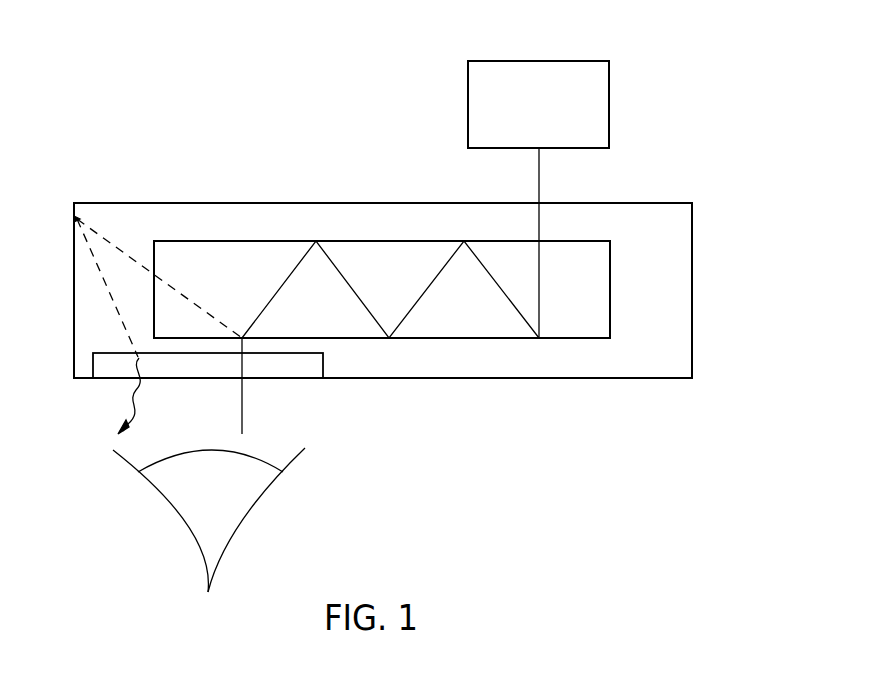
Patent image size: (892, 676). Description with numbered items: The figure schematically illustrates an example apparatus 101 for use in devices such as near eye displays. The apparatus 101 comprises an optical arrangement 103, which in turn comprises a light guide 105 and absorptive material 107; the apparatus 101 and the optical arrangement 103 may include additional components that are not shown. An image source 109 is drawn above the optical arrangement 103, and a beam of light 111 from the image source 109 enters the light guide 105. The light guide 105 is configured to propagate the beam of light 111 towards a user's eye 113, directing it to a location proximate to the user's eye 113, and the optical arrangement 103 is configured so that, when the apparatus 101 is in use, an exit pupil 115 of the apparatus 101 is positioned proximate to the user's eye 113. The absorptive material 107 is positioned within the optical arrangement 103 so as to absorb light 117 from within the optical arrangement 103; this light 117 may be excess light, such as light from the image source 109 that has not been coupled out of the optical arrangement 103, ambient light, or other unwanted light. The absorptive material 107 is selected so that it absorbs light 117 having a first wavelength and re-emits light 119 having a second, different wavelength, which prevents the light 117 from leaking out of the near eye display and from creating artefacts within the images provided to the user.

The apparatus 101 is at (701, 183).
The optical arrangement 103 is at (677, 275).
The light guide 105 is at (573, 338).
The absorptive material 107 is at (315, 380).
The image source 109 is at (537, 61).
The beam of light 111 is at (540, 190).
The user's eye 113 is at (240, 523).
The exit pupil 115 is at (243, 385).
The light 117 is at (116, 247).
The re-emitted light 119 is at (118, 405).